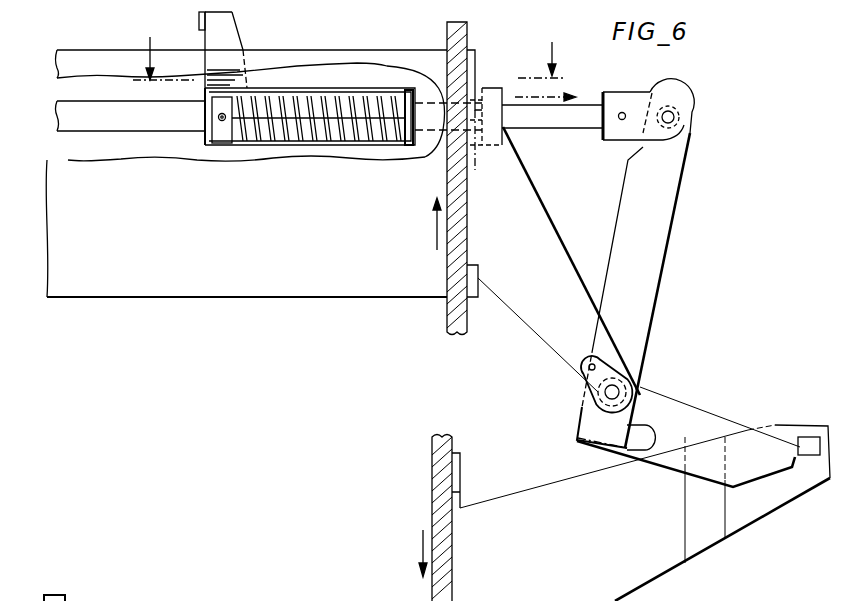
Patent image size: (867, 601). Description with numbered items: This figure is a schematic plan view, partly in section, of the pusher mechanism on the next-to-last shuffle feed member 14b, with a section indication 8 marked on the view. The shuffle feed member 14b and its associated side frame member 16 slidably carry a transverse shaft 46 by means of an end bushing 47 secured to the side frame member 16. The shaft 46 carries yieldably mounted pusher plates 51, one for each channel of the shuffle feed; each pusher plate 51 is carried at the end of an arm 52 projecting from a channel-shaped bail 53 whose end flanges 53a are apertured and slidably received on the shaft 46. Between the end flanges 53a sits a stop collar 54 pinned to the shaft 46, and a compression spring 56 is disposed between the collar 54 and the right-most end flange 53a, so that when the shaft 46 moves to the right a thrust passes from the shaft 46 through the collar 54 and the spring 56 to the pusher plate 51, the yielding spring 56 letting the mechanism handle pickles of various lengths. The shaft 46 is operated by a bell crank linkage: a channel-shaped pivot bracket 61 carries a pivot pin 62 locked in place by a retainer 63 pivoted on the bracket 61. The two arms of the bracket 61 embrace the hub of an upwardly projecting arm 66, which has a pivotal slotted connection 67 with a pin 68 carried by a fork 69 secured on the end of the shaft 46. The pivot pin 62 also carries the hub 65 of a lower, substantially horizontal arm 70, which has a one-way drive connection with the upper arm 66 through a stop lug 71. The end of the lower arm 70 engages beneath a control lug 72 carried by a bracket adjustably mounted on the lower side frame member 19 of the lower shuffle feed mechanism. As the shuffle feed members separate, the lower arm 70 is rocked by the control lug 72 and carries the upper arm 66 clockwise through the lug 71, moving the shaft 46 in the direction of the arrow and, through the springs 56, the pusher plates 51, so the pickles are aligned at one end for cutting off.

The section line indicator 8 is at (354, 54).
The shuffle feed member 14b is at (328, 283).
The side frame member 16 is at (450, 315).
The lower side frame member 19 is at (437, 482).
The transverse shaft 46 is at (137, 115).
The end bushing 47 is at (485, 85).
The pusher plate 51 is at (199, 18).
The arm 52 is at (225, 35).
The channel-shaped bail 53 is at (314, 145).
The end flange 53a is at (203, 110).
The stop collar 54 is at (223, 132).
The compression spring 56 is at (343, 133).
The pivot bracket 61 is at (537, 232).
The pivot pin 62 is at (600, 392).
The retainer 63 is at (582, 368).
The hub 65 is at (638, 387).
The upwardly projecting arm 66 is at (648, 277).
The pivotal slotted connection 67 is at (695, 118).
The pin 68 is at (677, 115).
The fork 69 is at (628, 103).
The lower arm 70 is at (703, 420).
The stop lug 71 is at (642, 443).
The control lug 72 is at (803, 435).